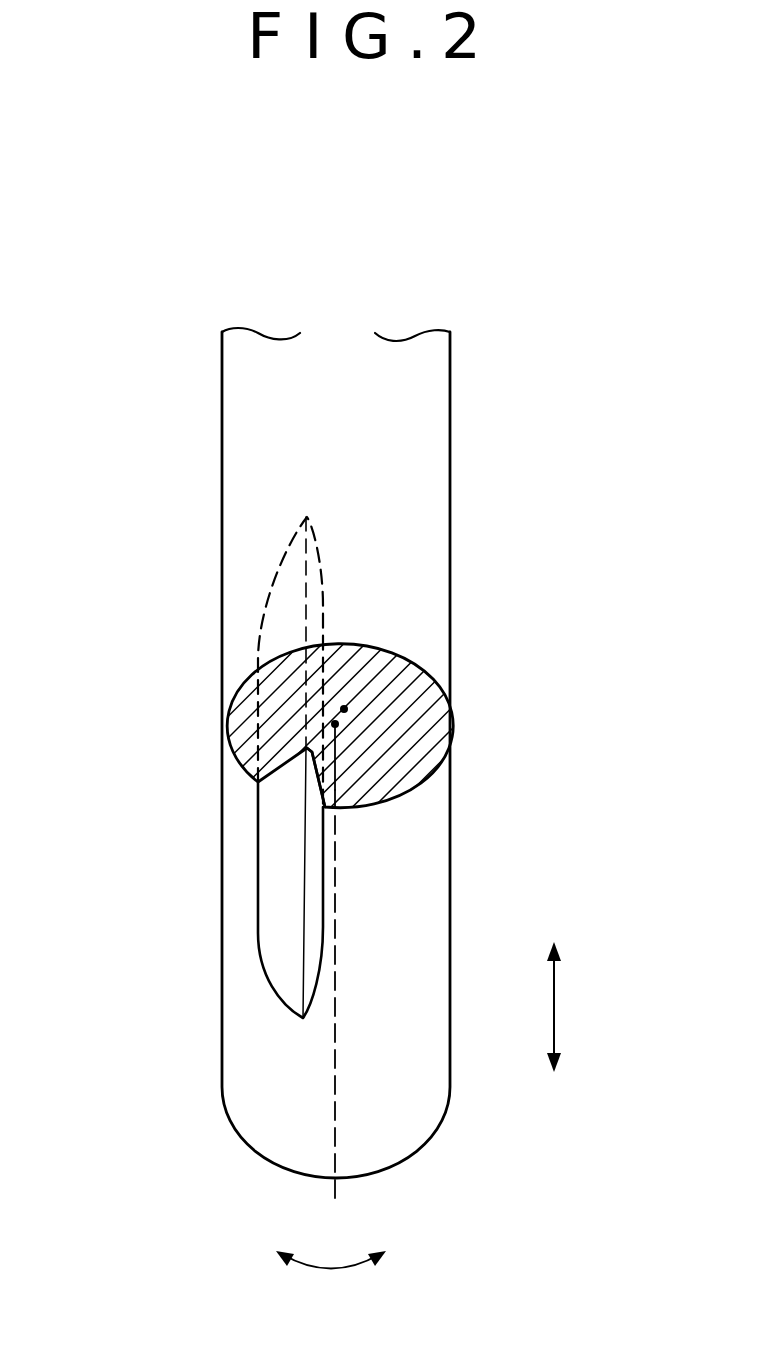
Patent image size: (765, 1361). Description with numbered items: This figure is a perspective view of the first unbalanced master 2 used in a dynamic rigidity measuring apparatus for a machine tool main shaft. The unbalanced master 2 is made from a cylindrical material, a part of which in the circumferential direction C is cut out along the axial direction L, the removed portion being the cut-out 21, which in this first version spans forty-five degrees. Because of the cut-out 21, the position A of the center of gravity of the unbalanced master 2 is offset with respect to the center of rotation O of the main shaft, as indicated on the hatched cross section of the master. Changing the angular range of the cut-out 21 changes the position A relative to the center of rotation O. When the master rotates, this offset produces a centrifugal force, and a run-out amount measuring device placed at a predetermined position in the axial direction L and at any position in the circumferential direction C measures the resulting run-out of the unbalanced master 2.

The unbalanced master 2 is at (480, 502).
The cut-out 21 is at (278, 880).
The position of the center of gravity A is at (344, 709).
The center of rotation O is at (335, 724).
The axial direction L is at (566, 1007).
The circumferential direction C is at (331, 1285).